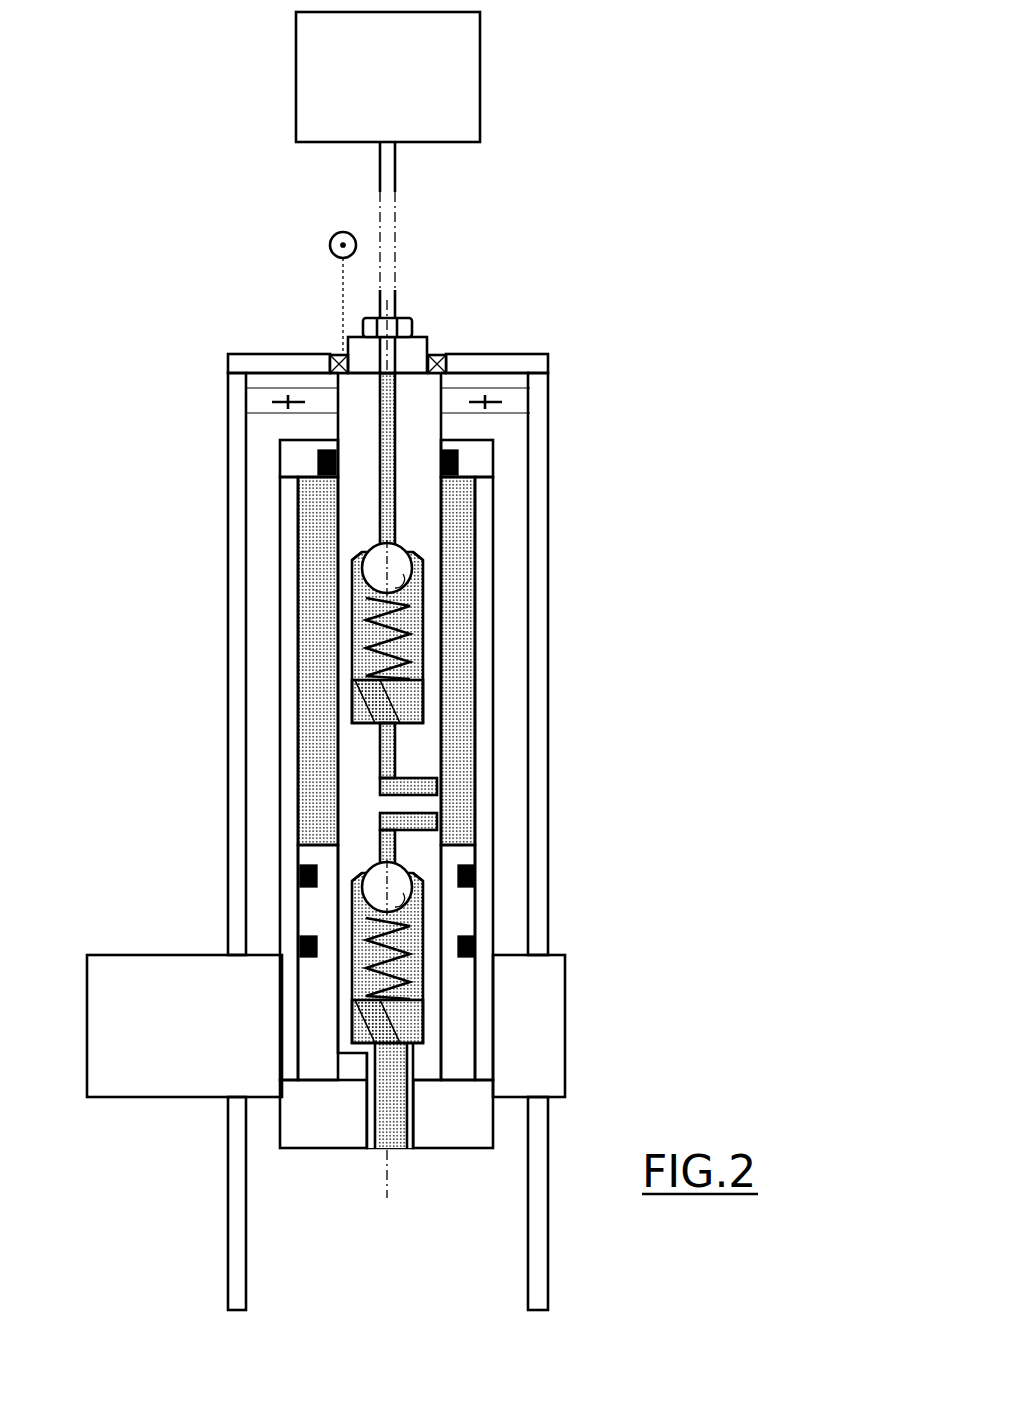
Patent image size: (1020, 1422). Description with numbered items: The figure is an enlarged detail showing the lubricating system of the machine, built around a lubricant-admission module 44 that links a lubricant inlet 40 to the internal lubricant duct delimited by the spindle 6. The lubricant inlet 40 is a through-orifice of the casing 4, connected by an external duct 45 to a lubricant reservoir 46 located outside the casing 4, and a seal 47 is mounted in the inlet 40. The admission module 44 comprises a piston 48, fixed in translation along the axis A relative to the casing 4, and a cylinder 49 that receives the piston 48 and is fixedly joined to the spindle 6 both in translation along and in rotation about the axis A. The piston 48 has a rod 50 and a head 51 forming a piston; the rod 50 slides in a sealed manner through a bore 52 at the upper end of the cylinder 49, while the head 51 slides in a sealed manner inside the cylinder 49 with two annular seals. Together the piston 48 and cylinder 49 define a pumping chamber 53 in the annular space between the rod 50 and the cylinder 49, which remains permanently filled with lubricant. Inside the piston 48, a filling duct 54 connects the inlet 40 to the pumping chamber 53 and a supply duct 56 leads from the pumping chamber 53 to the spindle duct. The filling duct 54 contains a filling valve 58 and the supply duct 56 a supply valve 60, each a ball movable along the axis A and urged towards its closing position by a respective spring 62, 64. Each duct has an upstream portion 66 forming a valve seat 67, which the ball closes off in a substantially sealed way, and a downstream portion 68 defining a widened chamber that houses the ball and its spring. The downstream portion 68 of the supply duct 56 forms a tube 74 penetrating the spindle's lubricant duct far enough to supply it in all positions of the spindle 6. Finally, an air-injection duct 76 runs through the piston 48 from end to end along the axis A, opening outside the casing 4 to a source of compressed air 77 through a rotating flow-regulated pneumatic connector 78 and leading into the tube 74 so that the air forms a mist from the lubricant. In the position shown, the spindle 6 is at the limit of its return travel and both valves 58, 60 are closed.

The casing 4 is at (236, 733).
The spindle 6 is at (290, 1137).
The lubricant inlet 40 is at (440, 330).
The lubricant-admission module 44 is at (495, 687).
The external duct 45 is at (380, 173).
The lubricant reservoir 46 is at (300, 85).
The seal 47 is at (424, 338).
The piston 48 is at (325, 596).
The cylinder 49 is at (483, 633).
The rod 50 is at (425, 541).
The head 51 is at (460, 965).
The bore 52 is at (425, 435).
The pumping chamber 53 is at (315, 672).
The filling duct 54 is at (380, 497).
The supply duct 56 is at (465, 877).
The filling valve 58 is at (405, 570).
The supply valve 60 is at (410, 912).
The spring 62 is at (368, 648).
The spring 64 is at (353, 920).
The upstream portion 66 is at (405, 512).
The valve seat 67 is at (360, 553).
The downstream portion 68 is at (403, 750).
The tube 74 is at (405, 1125).
The air-injection duct 76 is at (336, 380).
The source of compressed air 77 is at (330, 245).
The rotating flow-regulated pneumatic connector 78 is at (338, 356).
The axis A is at (386, 1186).